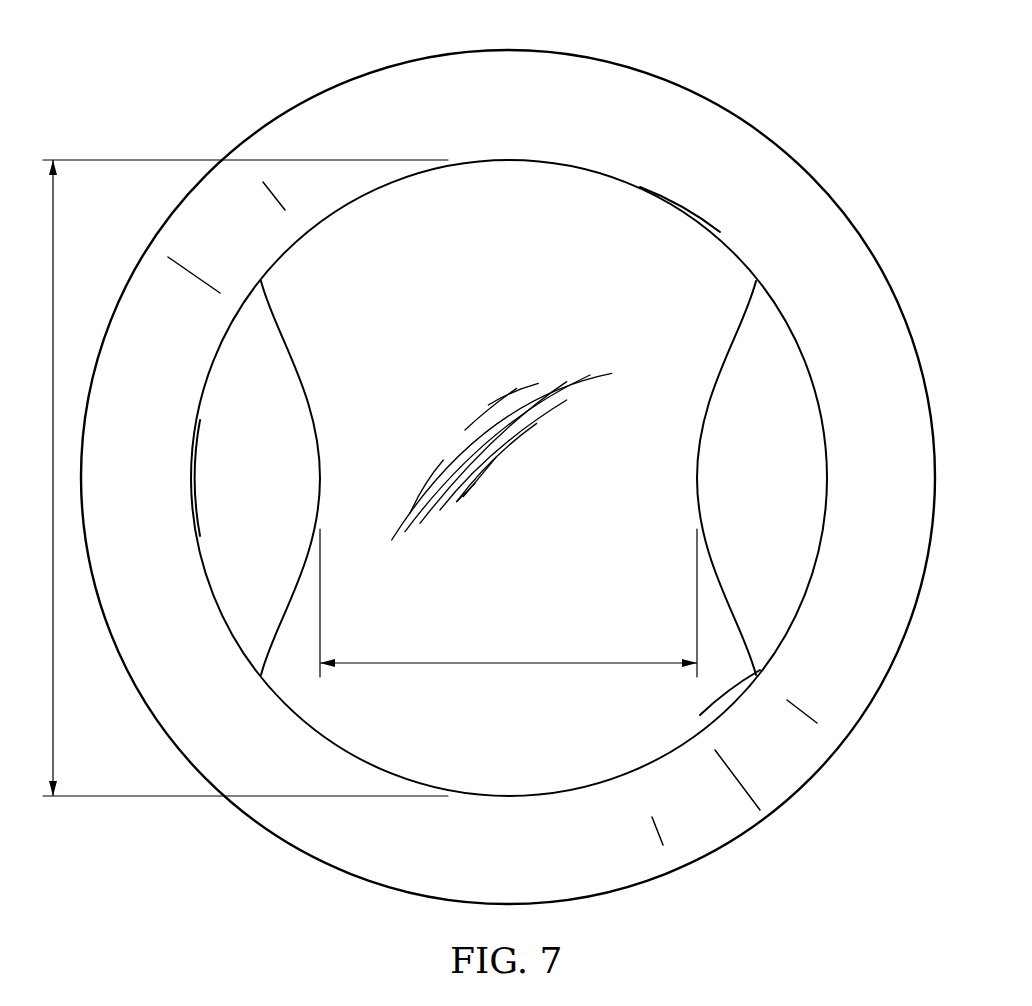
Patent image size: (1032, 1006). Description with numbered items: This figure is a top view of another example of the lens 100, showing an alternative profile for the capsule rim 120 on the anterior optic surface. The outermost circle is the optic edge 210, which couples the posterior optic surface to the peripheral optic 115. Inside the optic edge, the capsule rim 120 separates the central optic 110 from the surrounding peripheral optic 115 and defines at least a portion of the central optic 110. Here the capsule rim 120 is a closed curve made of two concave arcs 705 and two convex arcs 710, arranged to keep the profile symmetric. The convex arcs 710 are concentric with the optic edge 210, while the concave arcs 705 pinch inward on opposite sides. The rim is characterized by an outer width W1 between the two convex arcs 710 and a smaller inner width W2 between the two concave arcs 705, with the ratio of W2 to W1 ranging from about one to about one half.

The lens 100 is at (737, 66).
The optic edge 210 is at (306, 104).
The central optic 110 is at (567, 175).
The capsule rim 120 is at (702, 210).
The peripheral optic 115 is at (197, 477).
The concave arcs 705 is at (706, 406).
The convex arcs 710 is at (735, 698).